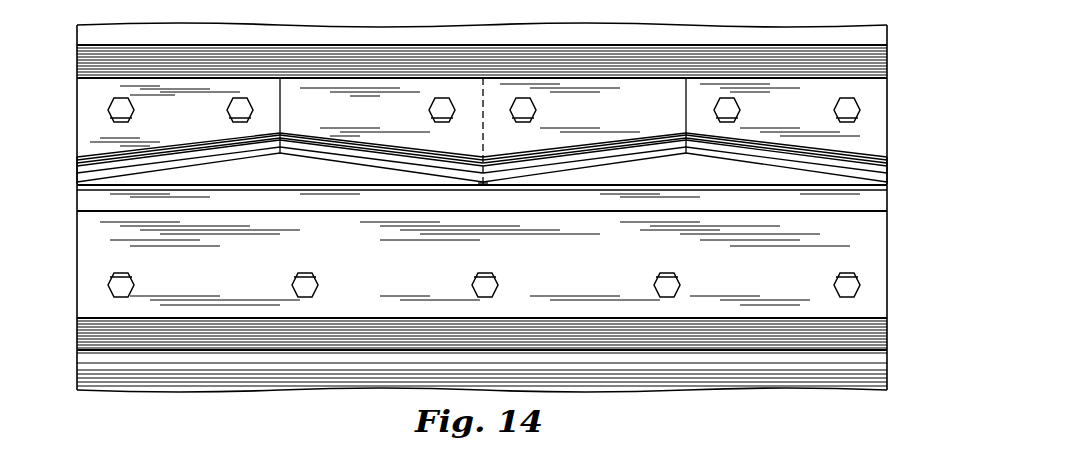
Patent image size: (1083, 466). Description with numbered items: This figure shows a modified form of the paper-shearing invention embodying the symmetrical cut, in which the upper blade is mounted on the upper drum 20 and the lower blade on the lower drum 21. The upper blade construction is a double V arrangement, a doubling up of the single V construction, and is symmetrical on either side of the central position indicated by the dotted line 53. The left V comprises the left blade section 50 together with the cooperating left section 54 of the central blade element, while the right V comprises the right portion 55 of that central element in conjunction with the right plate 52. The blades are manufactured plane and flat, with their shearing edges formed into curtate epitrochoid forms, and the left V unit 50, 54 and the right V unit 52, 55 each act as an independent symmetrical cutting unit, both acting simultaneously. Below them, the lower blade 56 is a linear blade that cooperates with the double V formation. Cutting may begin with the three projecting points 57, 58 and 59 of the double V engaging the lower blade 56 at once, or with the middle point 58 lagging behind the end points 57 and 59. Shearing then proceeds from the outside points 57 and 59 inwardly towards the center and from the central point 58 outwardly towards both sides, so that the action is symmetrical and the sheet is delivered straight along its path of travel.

The drum 20 is at (86, 30).
The drum 21 is at (84, 364).
The upper blade section 50 is at (203, 138).
The right plate 52 is at (763, 134).
The dotted line 53 is at (480, 78).
The left section of central element 54 is at (360, 137).
The right portion of central element 55 is at (637, 137).
The lower blade 56 is at (90, 216).
The projecting point 57 is at (80, 183).
The middle point 58 is at (483, 185).
The projecting point 59 is at (886, 180).